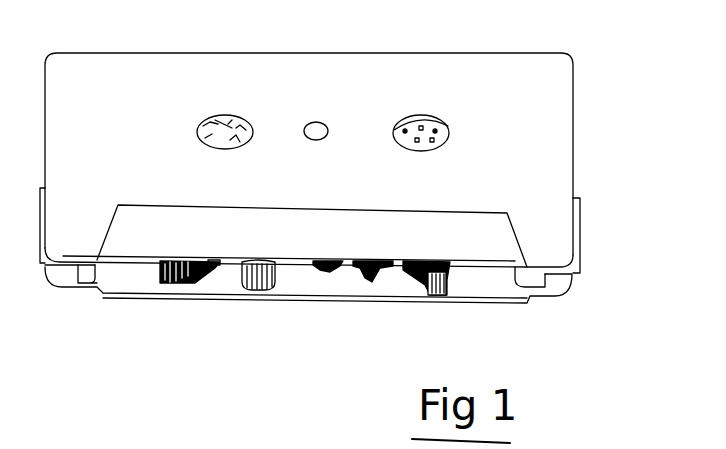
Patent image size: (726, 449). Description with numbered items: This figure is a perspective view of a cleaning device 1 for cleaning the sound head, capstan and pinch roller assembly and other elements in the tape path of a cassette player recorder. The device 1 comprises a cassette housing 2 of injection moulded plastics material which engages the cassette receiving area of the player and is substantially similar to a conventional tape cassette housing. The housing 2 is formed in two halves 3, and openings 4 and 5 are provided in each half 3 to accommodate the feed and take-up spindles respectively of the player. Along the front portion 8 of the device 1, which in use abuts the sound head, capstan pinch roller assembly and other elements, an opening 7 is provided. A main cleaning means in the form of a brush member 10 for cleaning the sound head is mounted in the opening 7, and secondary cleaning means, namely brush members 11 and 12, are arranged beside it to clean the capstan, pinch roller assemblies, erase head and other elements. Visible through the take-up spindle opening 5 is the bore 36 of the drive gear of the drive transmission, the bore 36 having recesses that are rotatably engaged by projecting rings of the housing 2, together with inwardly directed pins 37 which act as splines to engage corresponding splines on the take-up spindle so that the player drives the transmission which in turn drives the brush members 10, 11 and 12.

The cleaning device 1 is at (548, 32).
The cassette housing 2 is at (558, 132).
The housing halves 3 is at (553, 233).
The feed spindle opening 4 is at (245, 115).
The take-up spindle opening 5 is at (415, 127).
The opening 7 is at (123, 280).
The front portion 8 is at (507, 303).
The brush member 10 is at (325, 273).
The brush members 11 is at (250, 290).
The brush members 12 is at (173, 280).
The bore 36 is at (202, 118).
The inwardly directed pins 37 is at (230, 115).